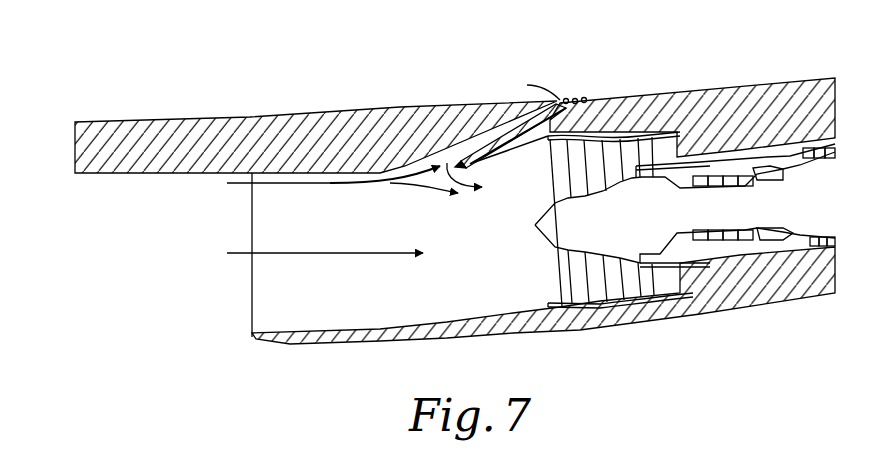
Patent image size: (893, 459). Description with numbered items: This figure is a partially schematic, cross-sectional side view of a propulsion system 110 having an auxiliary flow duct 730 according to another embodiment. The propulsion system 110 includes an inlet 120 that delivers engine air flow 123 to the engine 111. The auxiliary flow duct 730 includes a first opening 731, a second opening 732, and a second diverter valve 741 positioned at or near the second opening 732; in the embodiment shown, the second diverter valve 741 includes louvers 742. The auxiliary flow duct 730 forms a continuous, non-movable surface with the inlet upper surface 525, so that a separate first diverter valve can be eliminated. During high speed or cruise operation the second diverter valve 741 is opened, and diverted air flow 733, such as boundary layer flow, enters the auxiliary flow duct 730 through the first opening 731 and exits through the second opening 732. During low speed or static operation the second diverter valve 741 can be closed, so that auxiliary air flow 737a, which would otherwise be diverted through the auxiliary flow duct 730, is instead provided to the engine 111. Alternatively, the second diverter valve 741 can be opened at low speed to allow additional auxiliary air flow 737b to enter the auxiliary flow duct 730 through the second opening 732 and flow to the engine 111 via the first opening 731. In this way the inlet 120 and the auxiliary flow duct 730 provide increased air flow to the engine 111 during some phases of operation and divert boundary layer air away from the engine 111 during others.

The propulsion system 110 is at (672, 348).
The engine 111 is at (640, 143).
The inlet 120 is at (240, 303).
The engine air flow 123 is at (237, 256).
The inlet upper surface 525 is at (323, 183).
The auxiliary flow duct 730 is at (422, 155).
The first opening 731 is at (440, 172).
The second opening 732 is at (586, 82).
The diverted air flow 733 is at (405, 165).
The auxiliary air flow 737a is at (417, 182).
The additional auxiliary air flow 737b is at (483, 135).
The second diverter valve 741 is at (567, 92).
The louvers 742 is at (590, 100).